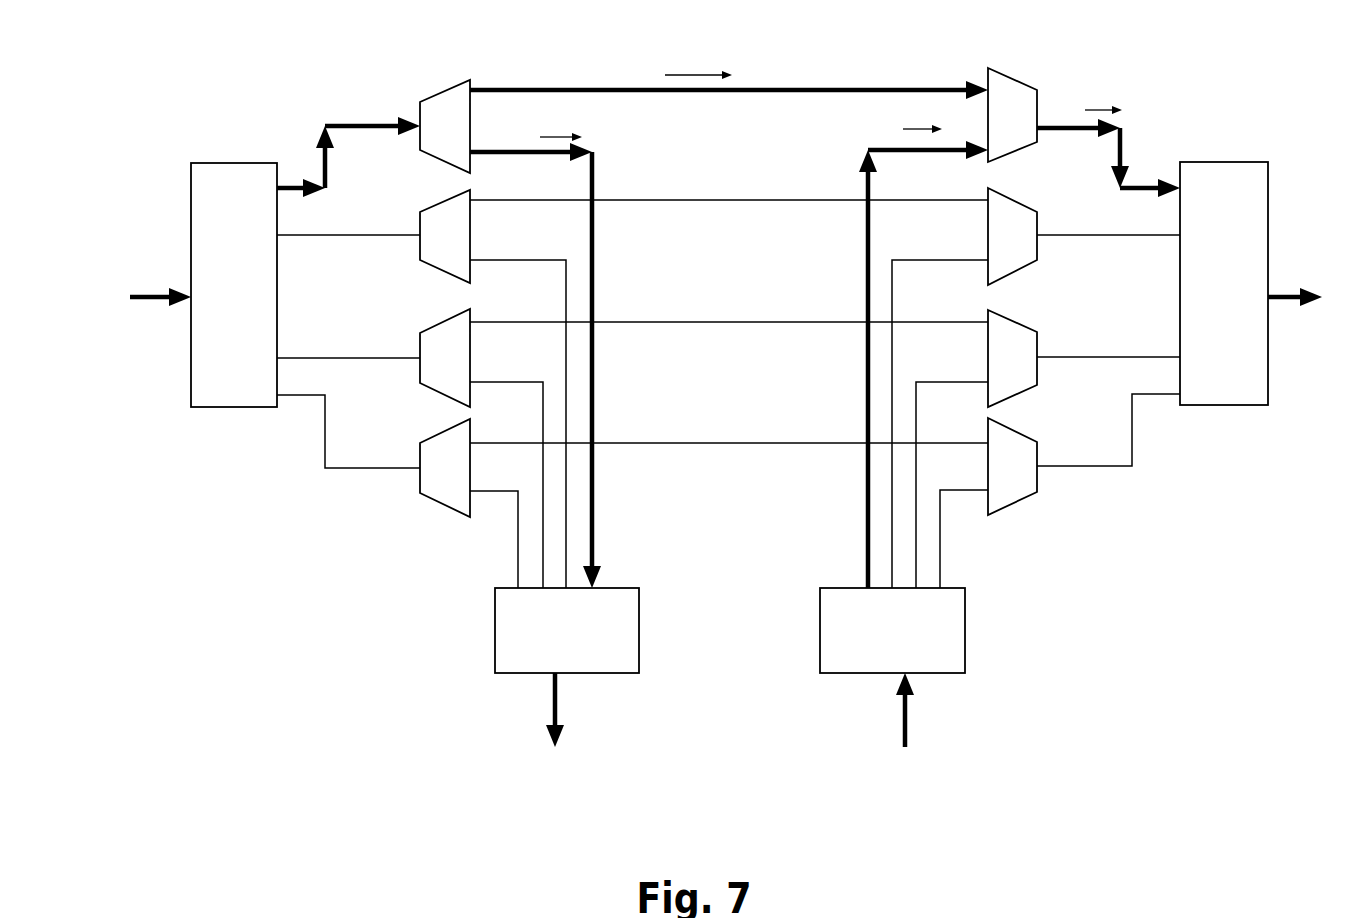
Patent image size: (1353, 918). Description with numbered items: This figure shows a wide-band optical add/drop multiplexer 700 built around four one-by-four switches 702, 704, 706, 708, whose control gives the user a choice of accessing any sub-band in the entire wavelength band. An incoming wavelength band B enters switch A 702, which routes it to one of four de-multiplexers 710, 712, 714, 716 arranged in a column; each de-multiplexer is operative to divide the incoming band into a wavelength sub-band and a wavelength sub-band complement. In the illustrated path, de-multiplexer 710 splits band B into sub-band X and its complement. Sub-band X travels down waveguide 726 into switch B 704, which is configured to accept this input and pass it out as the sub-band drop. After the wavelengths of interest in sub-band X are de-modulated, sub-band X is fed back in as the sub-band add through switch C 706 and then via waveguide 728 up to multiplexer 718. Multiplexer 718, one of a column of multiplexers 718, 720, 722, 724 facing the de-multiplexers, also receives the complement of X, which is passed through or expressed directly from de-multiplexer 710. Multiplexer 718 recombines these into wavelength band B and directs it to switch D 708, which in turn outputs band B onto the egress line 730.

The wide-band OADM 700 is at (335, 660).
The 1×4 switch 702 is at (192, 408).
The 1×4 switch 704 is at (495, 672).
The 1×4 switch 706 is at (827, 672).
The 1×4 switch 708 is at (1205, 410).
The de-multiplexer 710 is at (433, 100).
The de-multiplexer 712 is at (420, 225).
The de-multiplexer 714 is at (418, 348).
The de-multiplexer 716 is at (418, 452).
The multiplexer 718 is at (988, 72).
The multiplexer 720 is at (988, 192).
The multiplexer 722 is at (988, 315).
The multiplexer 724 is at (988, 429).
The waveguide 726 is at (593, 385).
The waveguide 728 is at (866, 275).
The egress line 730 is at (1292, 295).